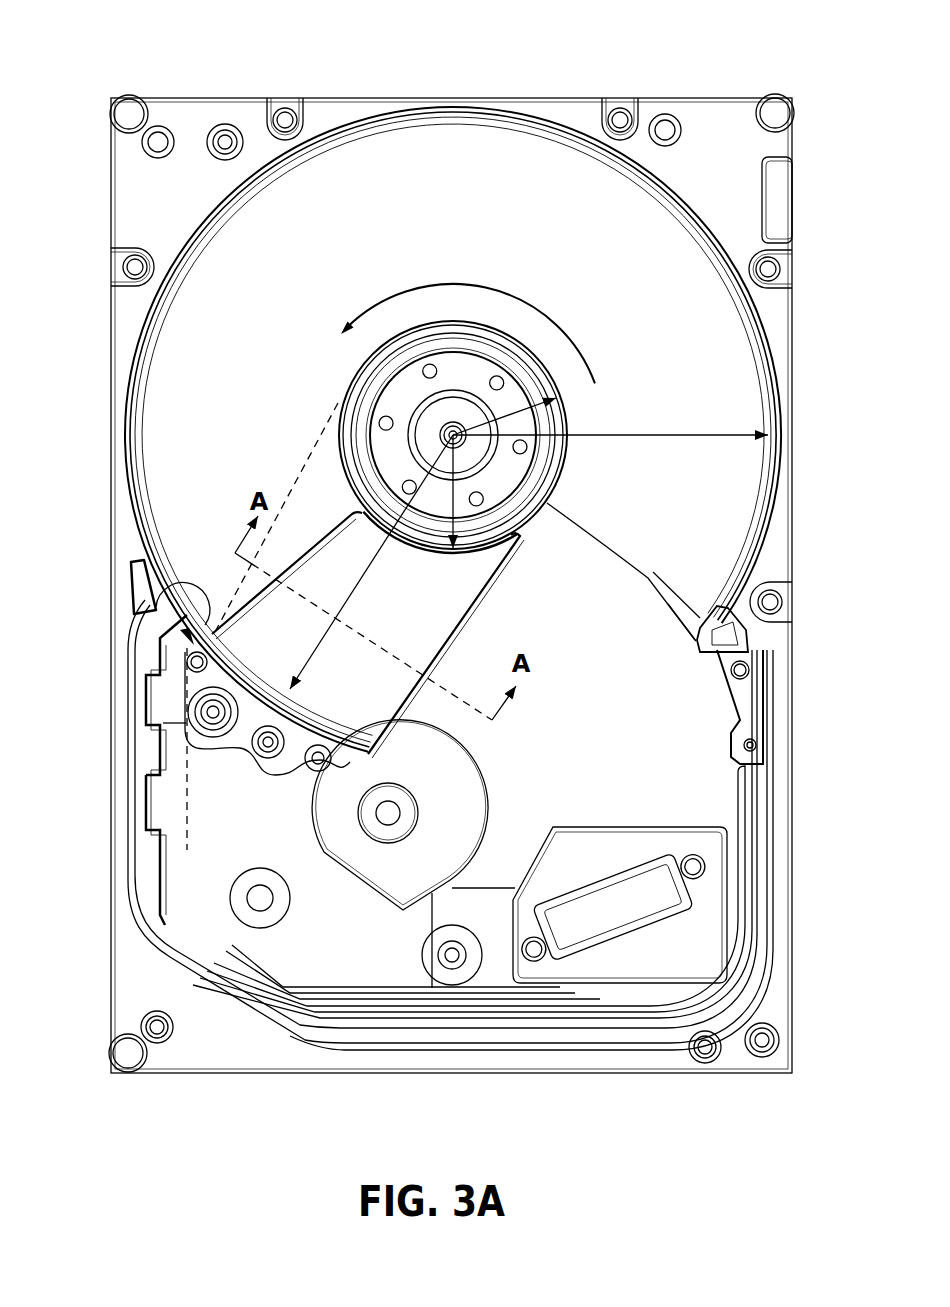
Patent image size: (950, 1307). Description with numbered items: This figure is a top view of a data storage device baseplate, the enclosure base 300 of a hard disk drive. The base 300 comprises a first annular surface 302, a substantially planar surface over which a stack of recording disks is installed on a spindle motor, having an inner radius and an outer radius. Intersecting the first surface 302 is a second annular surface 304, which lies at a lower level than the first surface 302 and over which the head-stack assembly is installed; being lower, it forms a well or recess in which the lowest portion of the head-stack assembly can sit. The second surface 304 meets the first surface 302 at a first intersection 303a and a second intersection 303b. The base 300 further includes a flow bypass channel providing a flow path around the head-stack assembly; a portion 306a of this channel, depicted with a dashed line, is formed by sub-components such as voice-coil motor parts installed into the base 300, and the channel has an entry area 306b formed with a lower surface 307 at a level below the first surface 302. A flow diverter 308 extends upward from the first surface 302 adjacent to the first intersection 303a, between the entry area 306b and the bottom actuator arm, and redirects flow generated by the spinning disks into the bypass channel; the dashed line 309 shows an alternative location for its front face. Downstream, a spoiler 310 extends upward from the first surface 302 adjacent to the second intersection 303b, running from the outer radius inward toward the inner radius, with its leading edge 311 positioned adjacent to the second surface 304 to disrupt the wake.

The enclosure base 300 is at (133, 37).
The first annular surface 302 is at (488, 157).
The first intersection 303a is at (482, 614).
The second intersection 303b is at (624, 570).
The second annular surface 304 is at (680, 692).
The portion of the flow bypass channel 306a is at (183, 783).
The entry area 306b is at (152, 603).
The lower surface 307 is at (162, 705).
The flow diverter 308 is at (371, 690).
The dashed line 309 is at (312, 458).
The spoiler 310 is at (655, 575).
The leading edge 311 is at (670, 620).